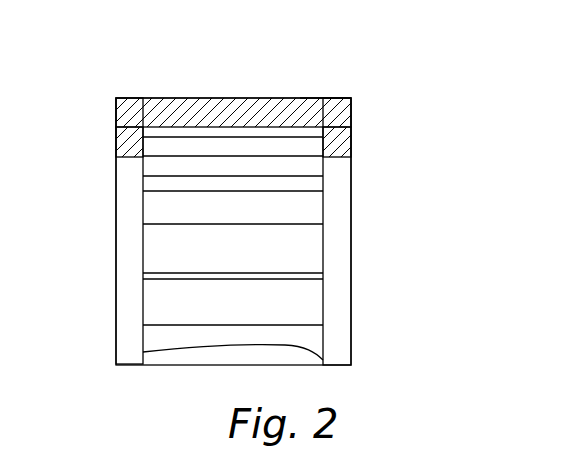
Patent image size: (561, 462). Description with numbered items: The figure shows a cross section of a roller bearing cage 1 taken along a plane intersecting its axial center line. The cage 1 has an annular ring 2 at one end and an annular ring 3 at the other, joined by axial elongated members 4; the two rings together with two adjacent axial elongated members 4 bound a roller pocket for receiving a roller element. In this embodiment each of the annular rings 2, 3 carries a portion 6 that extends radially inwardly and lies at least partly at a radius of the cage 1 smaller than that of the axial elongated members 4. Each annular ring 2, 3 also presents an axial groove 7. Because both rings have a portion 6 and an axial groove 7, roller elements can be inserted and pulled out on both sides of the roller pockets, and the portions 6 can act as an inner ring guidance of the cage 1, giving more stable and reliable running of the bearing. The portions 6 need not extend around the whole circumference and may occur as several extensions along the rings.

The cage 1 is at (332, 80).
The annular ring 2 is at (365, 170).
The annular ring 3 is at (109, 177).
The axial elongated member 4 is at (225, 97).
The portion 6 is at (117, 146).
The axial groove 7 is at (344, 98).